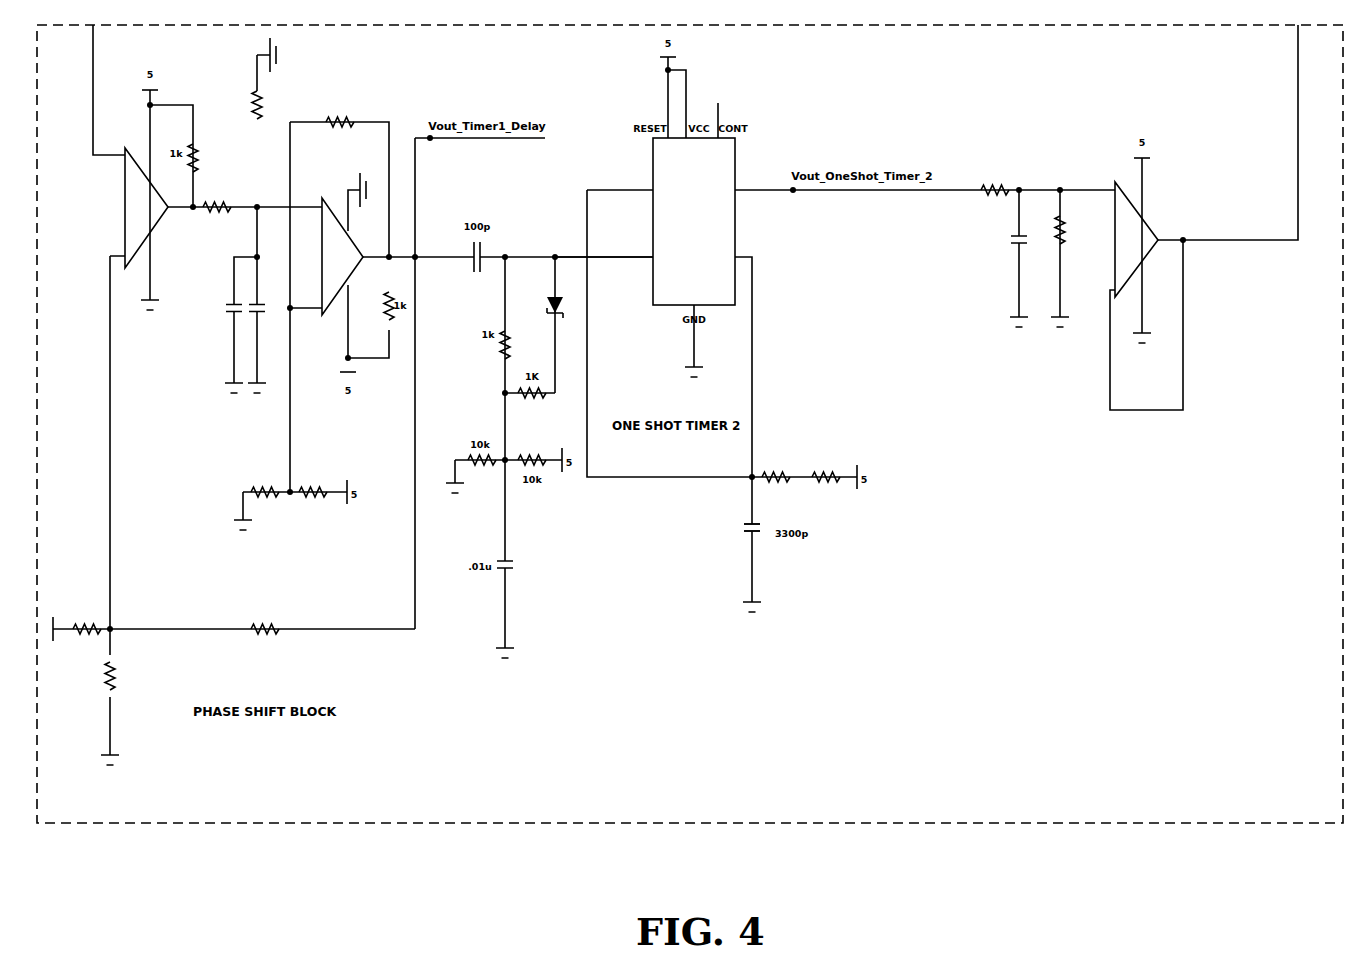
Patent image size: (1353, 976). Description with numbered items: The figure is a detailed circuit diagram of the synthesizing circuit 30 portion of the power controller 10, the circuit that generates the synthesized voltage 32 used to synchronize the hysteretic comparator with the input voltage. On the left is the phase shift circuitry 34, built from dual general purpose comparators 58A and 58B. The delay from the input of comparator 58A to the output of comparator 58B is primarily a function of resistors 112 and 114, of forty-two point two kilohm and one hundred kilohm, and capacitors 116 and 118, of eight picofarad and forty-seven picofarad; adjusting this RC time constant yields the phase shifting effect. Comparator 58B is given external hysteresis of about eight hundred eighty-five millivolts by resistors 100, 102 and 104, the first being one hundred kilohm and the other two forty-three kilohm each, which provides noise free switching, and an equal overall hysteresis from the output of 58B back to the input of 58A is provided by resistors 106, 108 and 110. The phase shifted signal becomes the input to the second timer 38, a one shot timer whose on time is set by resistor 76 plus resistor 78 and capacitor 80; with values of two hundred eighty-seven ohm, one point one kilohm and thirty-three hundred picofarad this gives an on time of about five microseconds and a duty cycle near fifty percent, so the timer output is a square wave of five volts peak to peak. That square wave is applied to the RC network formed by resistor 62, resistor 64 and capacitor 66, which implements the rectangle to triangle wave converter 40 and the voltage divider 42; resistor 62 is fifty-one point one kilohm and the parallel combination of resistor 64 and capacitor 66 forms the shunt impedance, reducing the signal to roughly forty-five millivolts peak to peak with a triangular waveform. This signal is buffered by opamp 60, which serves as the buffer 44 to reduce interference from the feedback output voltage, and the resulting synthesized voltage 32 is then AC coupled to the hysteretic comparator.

The power controller 10 is at (1058, 664).
The synthesizing circuit 30 is at (737, 690).
The synthesized voltage 32 is at (1252, 205).
The phase shift circuitry 34 is at (435, 688).
The second timer 38 is at (735, 228).
The wave converter 40 is at (1026, 380).
The voltage divider 42 is at (1260, 358).
The buffer 44 is at (1231, 418).
The comparator 58A is at (125, 215).
The comparator 58B is at (333, 305).
The opamp 60 is at (1115, 183).
The resistor 62 is at (985, 188).
The resistor 64 is at (1062, 253).
The capacitor 66 is at (1015, 248).
The resistor 76 is at (837, 473).
The resistor 78 is at (788, 475).
The capacitor 80 is at (757, 535).
The resistor 100 is at (352, 115).
The resistor 102 is at (262, 497).
The resistor 104 is at (320, 498).
The resistor 106 is at (277, 632).
The resistor 108 is at (87, 637).
The resistor 110 is at (112, 695).
The resistor 112 is at (225, 213).
The resistor 114 is at (258, 90).
The capacitor 116 is at (233, 315).
The capacitor 118 is at (255, 315).